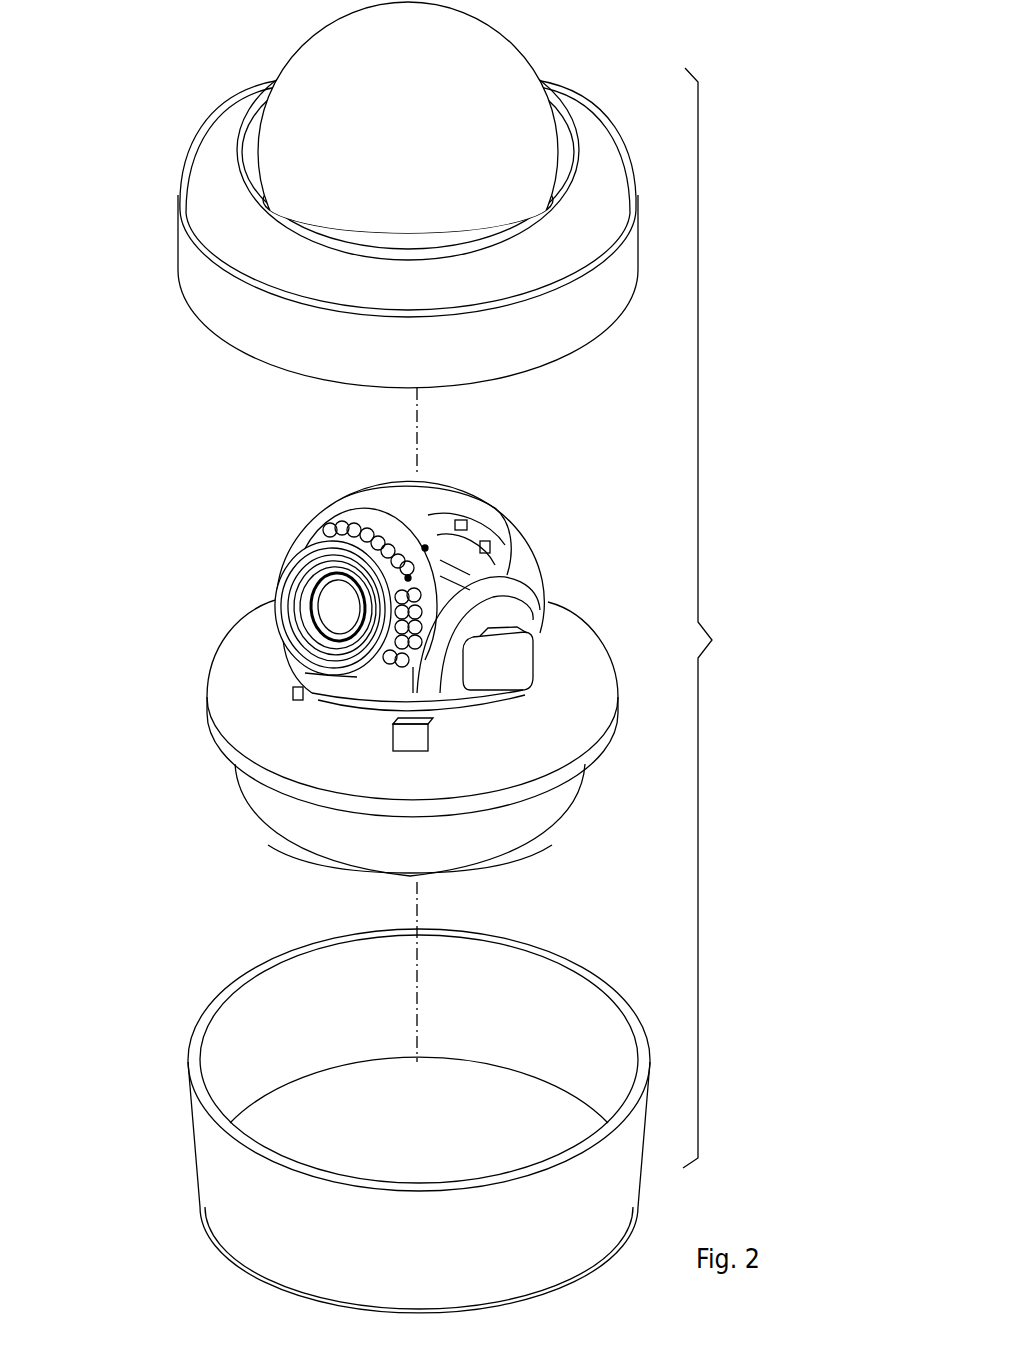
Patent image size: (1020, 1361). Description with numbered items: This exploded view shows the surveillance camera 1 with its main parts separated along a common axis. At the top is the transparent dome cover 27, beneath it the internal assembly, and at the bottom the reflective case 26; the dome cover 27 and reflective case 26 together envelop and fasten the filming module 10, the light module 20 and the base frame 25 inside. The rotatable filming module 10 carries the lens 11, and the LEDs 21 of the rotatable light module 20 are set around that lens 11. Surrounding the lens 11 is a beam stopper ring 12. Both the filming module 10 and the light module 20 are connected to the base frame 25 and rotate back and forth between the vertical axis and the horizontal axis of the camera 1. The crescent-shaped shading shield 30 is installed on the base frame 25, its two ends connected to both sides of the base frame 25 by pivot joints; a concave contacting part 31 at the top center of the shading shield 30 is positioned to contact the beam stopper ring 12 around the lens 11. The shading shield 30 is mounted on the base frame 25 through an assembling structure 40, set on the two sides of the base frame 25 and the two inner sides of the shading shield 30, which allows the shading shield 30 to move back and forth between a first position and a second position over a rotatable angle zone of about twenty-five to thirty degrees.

The surveillance camera 1 is at (712, 618).
The filming module 10 is at (278, 572).
The lens 11 is at (333, 610).
The beam stopper ring 12 is at (303, 553).
The light module 20 is at (343, 517).
The LED 21 is at (383, 520).
The base frame 25 is at (210, 740).
The reflective case 26 is at (186, 1047).
The transparent dome cover 27 is at (302, 50).
The shading shield 30 is at (397, 693).
The concave contacting part 31 is at (318, 677).
The assembling structure 40 is at (533, 675).